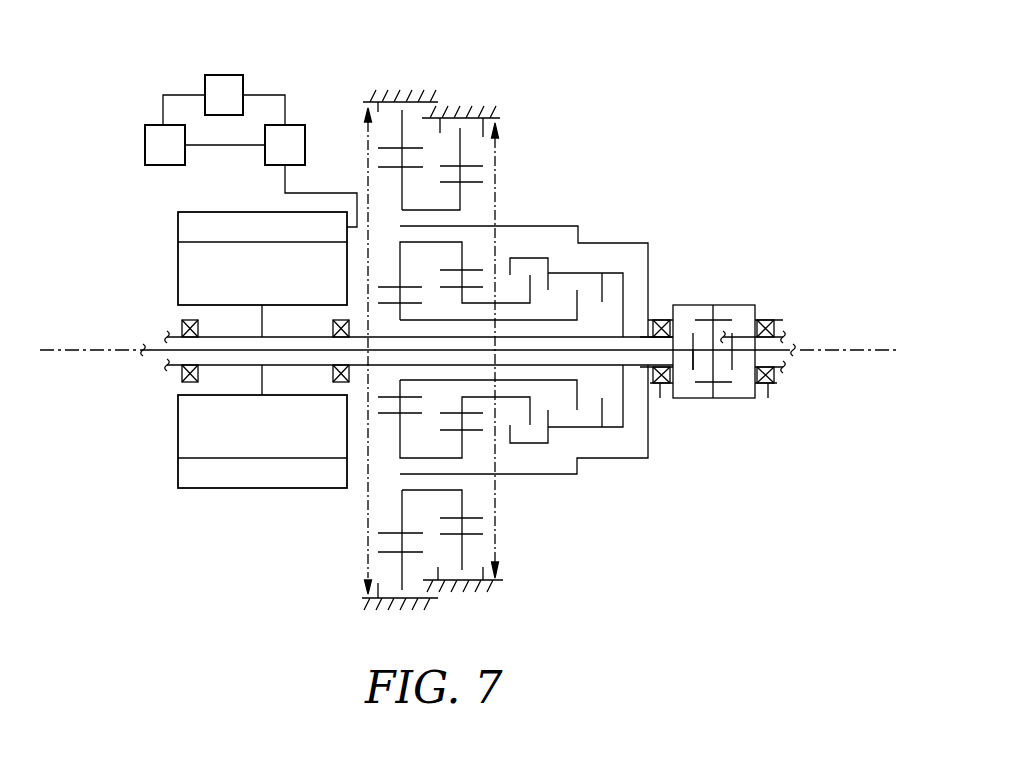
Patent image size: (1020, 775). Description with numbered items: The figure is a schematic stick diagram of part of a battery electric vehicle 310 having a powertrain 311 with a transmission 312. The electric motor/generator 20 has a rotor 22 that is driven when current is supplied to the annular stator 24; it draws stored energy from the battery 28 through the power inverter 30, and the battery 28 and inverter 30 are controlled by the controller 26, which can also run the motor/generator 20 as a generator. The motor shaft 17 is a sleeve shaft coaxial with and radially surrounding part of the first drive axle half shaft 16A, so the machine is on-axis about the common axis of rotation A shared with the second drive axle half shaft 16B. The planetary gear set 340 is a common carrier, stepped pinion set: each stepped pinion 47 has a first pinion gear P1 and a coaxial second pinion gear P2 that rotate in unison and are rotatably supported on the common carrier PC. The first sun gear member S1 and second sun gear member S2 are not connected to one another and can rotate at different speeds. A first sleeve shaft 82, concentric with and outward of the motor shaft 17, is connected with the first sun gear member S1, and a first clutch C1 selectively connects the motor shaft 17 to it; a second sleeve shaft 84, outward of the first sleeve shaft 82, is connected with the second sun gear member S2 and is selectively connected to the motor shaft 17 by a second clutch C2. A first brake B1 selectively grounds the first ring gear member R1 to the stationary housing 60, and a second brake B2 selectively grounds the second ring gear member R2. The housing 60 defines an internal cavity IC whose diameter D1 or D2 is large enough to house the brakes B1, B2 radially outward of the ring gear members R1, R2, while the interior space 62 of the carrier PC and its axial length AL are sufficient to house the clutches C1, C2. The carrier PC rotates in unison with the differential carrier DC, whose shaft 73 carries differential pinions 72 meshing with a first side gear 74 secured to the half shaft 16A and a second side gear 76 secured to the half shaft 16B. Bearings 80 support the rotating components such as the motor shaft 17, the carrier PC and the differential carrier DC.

The battery electric vehicle 310 is at (95, 135).
The battery 28 is at (157, 125).
The controller 26 is at (225, 75).
The power inverter 30 is at (290, 125).
The electric motor/generator 20 is at (110, 247).
The annular stator 24 is at (178, 232).
The rotor 22 is at (178, 278).
The motor shaft 17 is at (277, 337).
The first drive axle half shaft 16A is at (150, 352).
The second drive axle half shaft 16B is at (797, 348).
The axis of rotation A is at (92, 346).
The bearings 80 is at (198, 380).
The stationary housing 60 is at (484, 105).
The second diameter D2 is at (368, 552).
The first diameter D1 is at (495, 552).
The first brake B1 is at (381, 134).
The second brake B2 is at (480, 142).
The first ring gear member R1 is at (407, 150).
The second ring gear member R2 is at (470, 157).
The stepped pinion 47 is at (436, 210).
The planetary gear set 340 is at (358, 512).
The first pinion gear P1 is at (407, 290).
The first sun gear member S1 is at (413, 304).
The second pinion gear P2 is at (470, 270).
The second sun gear member S2 is at (472, 288).
The common carrier member PC is at (533, 226).
The internal cavity IC is at (540, 157).
The interior space 62 is at (548, 296).
The second clutch C2 is at (570, 252).
The first clutch C1 is at (600, 315).
The differential carrier DC is at (695, 305).
The first side gear 74 is at (693, 337).
The shaft 73 is at (693, 370).
The differential pinions 72 is at (725, 332).
The second side gear 76 is at (738, 337).
The first sleeve shaft 82 is at (557, 382).
The second sleeve shaft 84 is at (510, 398).
The axial length AL is at (590, 355).
The powertrain 311 is at (641, 92).
The transmission 312 is at (659, 148).